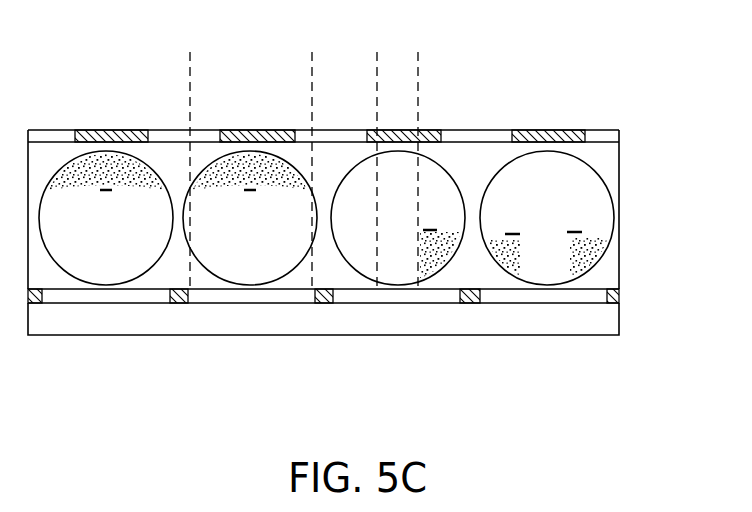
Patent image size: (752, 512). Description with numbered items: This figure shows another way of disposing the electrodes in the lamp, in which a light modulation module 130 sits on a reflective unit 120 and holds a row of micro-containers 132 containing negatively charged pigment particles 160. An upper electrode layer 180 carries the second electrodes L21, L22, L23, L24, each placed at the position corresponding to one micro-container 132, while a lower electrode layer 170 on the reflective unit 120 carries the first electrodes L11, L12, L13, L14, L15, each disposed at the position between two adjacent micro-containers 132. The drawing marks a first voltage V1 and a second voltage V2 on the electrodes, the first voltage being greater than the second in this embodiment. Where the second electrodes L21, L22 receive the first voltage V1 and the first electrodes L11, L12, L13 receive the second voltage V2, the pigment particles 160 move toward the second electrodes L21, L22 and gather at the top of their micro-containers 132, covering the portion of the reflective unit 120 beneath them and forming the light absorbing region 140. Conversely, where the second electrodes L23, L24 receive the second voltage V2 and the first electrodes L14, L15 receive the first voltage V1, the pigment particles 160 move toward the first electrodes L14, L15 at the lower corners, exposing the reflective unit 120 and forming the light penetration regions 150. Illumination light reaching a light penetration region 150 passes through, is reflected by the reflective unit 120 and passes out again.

The reflective unit 120 is at (618, 333).
The light modulation module 130 is at (615, 203).
The micro-container 132 is at (595, 172).
The pigment particles 160 is at (600, 258).
The first electrode layer 170 is at (620, 295).
The second electrode layer 180 is at (620, 137).
The light absorbing region 140 is at (313, 58).
The light penetration region 150 is at (417, 58).
The first electrode L11 is at (42, 292).
The first electrode L12 is at (170, 292).
The first electrode L13 is at (333, 292).
The first electrode L14 is at (460, 292).
The first electrode L15 is at (607, 292).
The second electrode L21 is at (134, 130).
The second electrode L22 is at (283, 130).
The second electrode L23 is at (427, 130).
The second electrode L24 is at (570, 130).
The first voltage V1 is at (360, 218).
The second voltage V2 is at (294, 218).